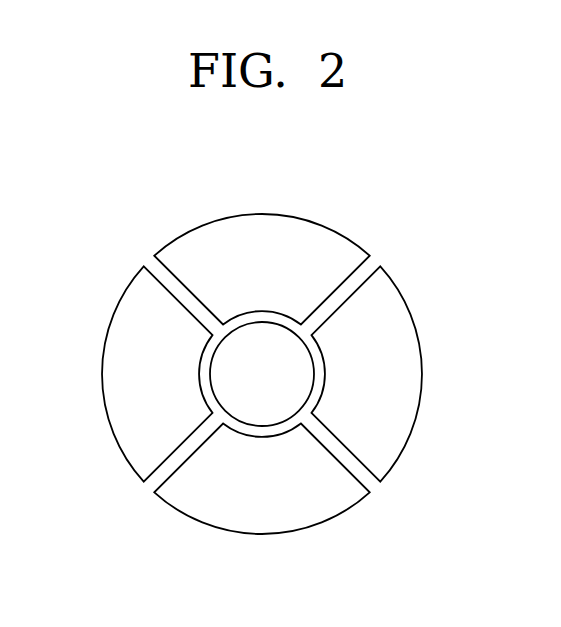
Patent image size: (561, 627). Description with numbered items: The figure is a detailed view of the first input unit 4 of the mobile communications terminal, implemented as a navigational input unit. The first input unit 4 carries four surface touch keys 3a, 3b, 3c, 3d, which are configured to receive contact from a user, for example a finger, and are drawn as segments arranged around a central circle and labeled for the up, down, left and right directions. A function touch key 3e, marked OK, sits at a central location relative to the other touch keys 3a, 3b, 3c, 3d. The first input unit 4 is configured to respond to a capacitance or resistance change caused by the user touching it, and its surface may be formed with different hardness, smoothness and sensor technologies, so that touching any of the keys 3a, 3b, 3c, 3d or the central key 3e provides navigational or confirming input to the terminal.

The first input unit 4 is at (282, 368).
The surface touch key 3a is at (335, 237).
The surface touch key 3b is at (330, 512).
The surface touch key 3c is at (120, 452).
The surface touch key 3d is at (397, 448).
The function touch key 3e is at (295, 353).